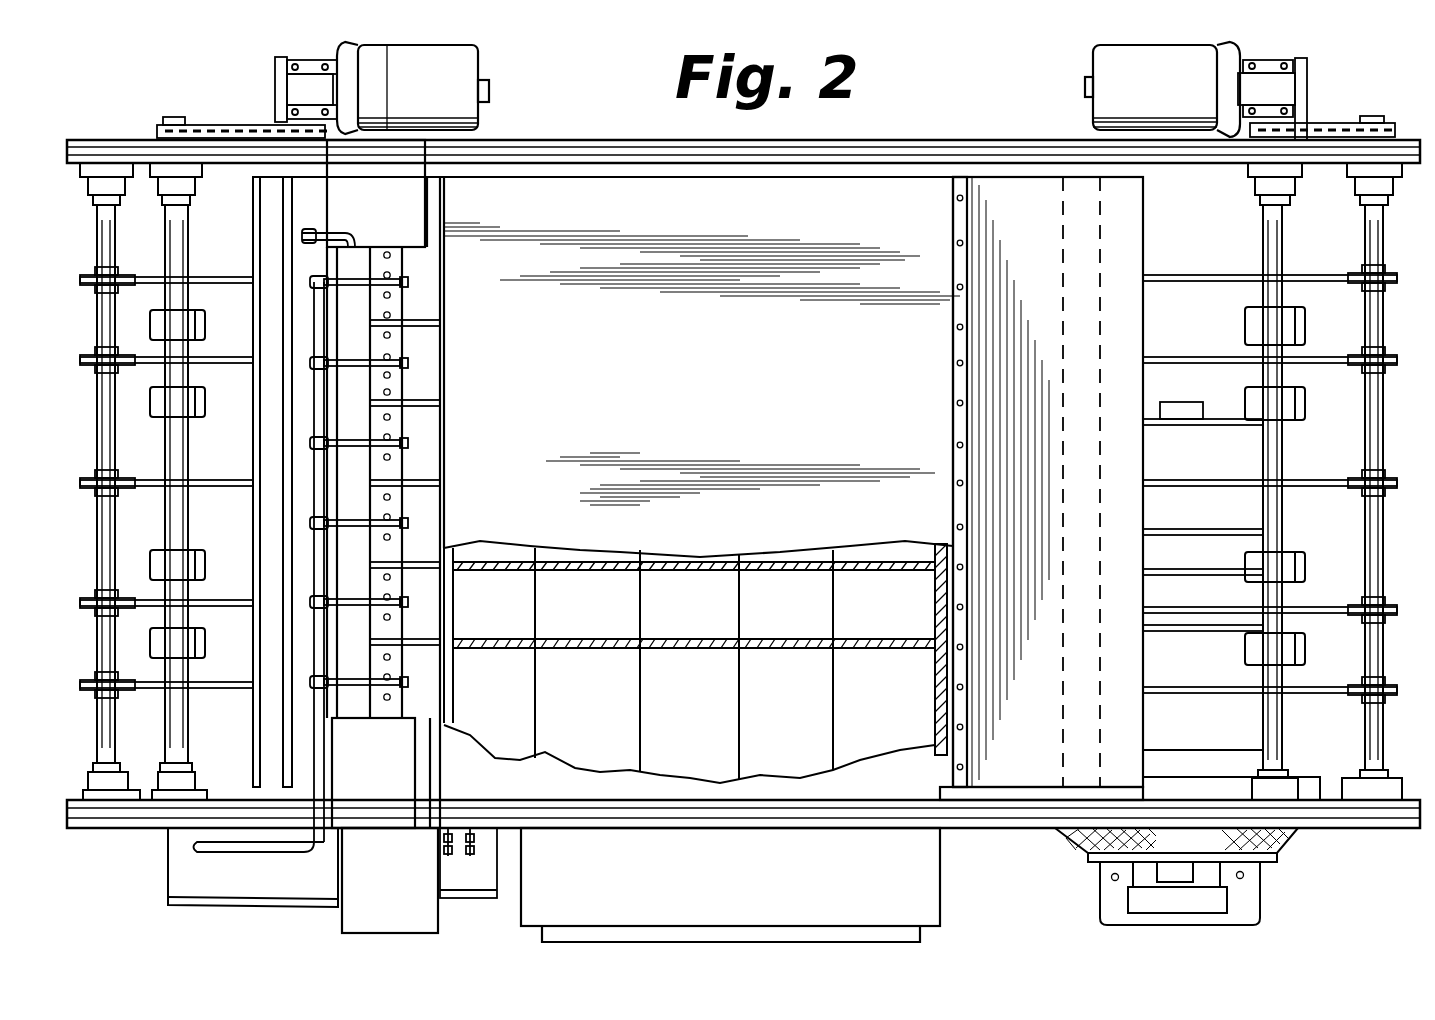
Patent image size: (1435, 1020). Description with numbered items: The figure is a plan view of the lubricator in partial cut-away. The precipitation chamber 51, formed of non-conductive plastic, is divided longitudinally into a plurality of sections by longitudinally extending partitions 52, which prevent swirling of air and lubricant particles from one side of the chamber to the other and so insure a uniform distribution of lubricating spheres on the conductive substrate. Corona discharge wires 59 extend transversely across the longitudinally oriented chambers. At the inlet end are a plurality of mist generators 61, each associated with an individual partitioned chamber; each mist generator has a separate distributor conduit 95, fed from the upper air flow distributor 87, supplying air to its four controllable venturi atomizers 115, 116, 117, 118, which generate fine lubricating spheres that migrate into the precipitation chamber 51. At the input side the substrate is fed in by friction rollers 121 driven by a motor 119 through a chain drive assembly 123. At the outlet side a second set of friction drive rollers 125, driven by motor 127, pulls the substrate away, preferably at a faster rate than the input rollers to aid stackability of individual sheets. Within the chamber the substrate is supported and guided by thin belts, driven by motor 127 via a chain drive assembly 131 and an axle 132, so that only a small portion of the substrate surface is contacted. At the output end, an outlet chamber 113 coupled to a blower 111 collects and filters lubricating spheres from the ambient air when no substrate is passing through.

The precipitation chamber 51 is at (724, 389).
The longitudinally extending partitions 52 is at (681, 639).
The corona discharge wires 59 is at (602, 712).
The upper mist generator 61 is at (447, 537).
The upper air flow distributor 87 is at (262, 889).
The distributor conduit 95 is at (355, 289).
The blower 111 is at (1262, 897).
The outlet chamber 113 is at (1040, 182).
The venturi atomizer 115 is at (390, 392).
The venturi atomizer 116 is at (390, 375).
The venturi atomizer 117 is at (390, 357).
The venturi atomizer 118 is at (390, 334).
The motor 119 is at (480, 64).
The friction rollers 121 is at (200, 650).
The chain drive assembly 123 is at (225, 125).
The friction drive rollers 125 is at (1290, 552).
The motor 127 is at (1170, 96).
The chain drive assembly 131 is at (1340, 123).
The axle 132 is at (1370, 562).